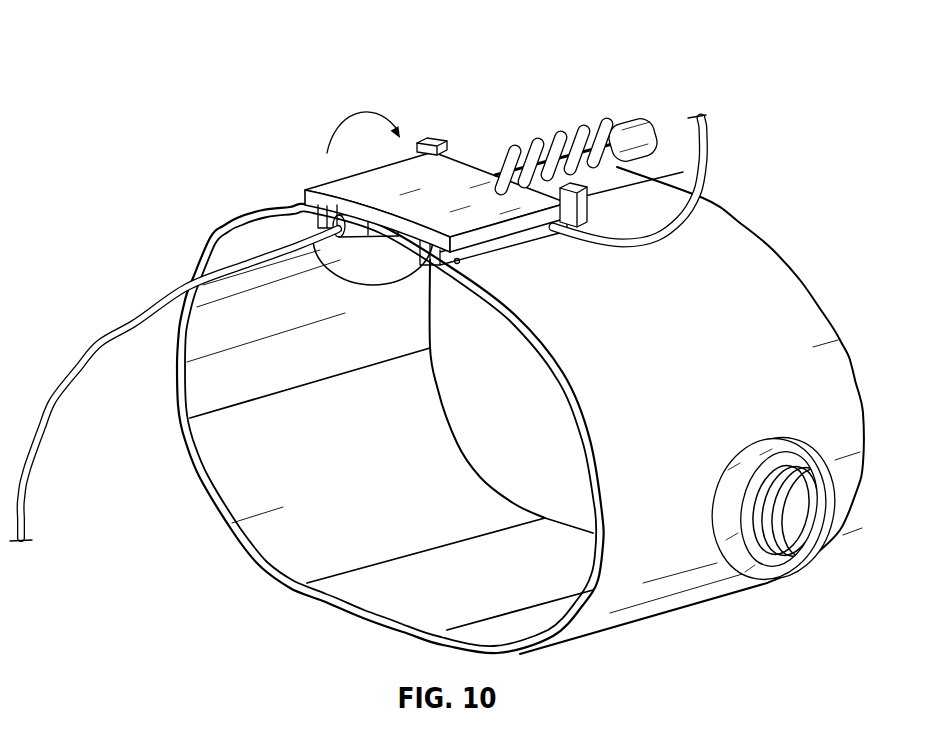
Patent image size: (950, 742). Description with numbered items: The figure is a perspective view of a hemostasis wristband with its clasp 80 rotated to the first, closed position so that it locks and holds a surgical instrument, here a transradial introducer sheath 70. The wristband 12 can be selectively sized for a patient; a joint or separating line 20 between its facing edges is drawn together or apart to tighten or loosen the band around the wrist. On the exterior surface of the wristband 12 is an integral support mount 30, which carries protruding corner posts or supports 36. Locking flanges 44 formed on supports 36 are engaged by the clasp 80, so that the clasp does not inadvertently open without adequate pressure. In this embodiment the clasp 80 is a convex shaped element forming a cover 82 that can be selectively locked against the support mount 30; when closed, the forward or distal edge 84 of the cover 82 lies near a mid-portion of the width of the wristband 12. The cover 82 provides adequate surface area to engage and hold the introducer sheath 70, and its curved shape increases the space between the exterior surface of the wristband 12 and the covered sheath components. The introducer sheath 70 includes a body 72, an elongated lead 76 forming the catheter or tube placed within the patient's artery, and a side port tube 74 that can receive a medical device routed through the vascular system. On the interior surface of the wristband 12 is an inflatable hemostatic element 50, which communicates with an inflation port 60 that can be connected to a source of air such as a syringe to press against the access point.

The wristband 12 is at (346, 505).
The joint or separating line 20 is at (333, 382).
The support mount 30 is at (536, 245).
The corner post or support 36 is at (449, 150).
The locking flange 44 is at (434, 137).
The hemostatic element 50 is at (362, 272).
The inflation port 60 is at (810, 488).
The introducer sheath 70 is at (614, 86).
The body 72 is at (552, 140).
The side port tube 74 is at (708, 150).
The elongated lead 76 is at (100, 336).
The clasp 80 is at (320, 163).
The cover 82 is at (437, 193).
The forward or distal edge 84 is at (527, 143).